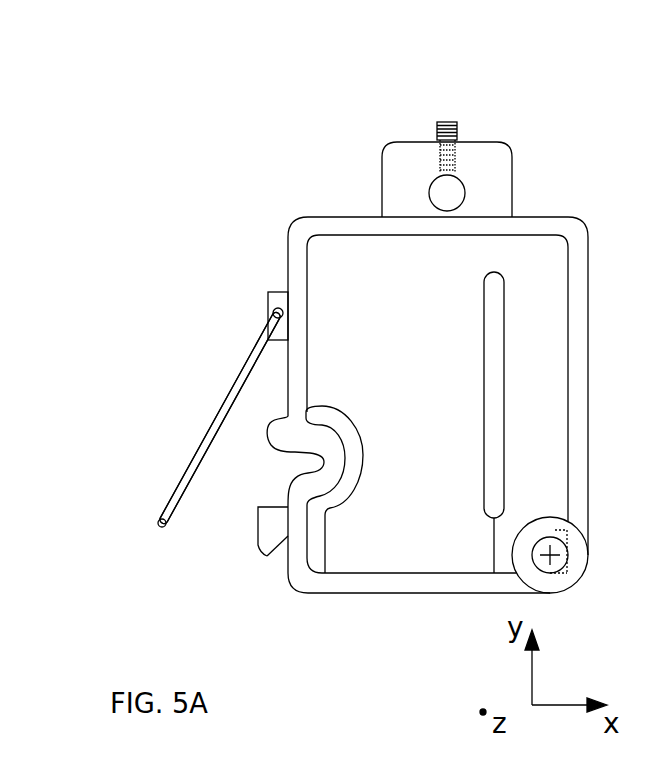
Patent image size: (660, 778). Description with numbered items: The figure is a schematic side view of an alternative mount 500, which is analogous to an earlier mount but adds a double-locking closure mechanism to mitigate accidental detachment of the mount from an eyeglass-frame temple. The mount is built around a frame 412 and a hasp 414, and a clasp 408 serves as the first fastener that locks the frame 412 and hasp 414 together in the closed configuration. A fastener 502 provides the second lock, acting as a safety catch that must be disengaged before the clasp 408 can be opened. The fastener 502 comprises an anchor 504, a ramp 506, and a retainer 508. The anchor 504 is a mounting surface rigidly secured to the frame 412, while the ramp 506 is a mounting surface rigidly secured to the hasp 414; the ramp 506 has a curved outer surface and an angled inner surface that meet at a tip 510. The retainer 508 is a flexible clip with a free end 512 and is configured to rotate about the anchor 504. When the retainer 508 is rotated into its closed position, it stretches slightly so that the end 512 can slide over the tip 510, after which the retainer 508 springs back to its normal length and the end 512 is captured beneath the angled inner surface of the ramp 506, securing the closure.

The mount 500 is at (200, 92).
The fastener 502 is at (158, 320).
The anchor 504 is at (282, 292).
The ramp 506 is at (272, 573).
The retainer 508 is at (190, 462).
The tip 510 is at (258, 555).
The end 512 is at (158, 521).
The clasp 408 is at (346, 405).
The frame 412 is at (548, 227).
The hasp 414 is at (382, 580).